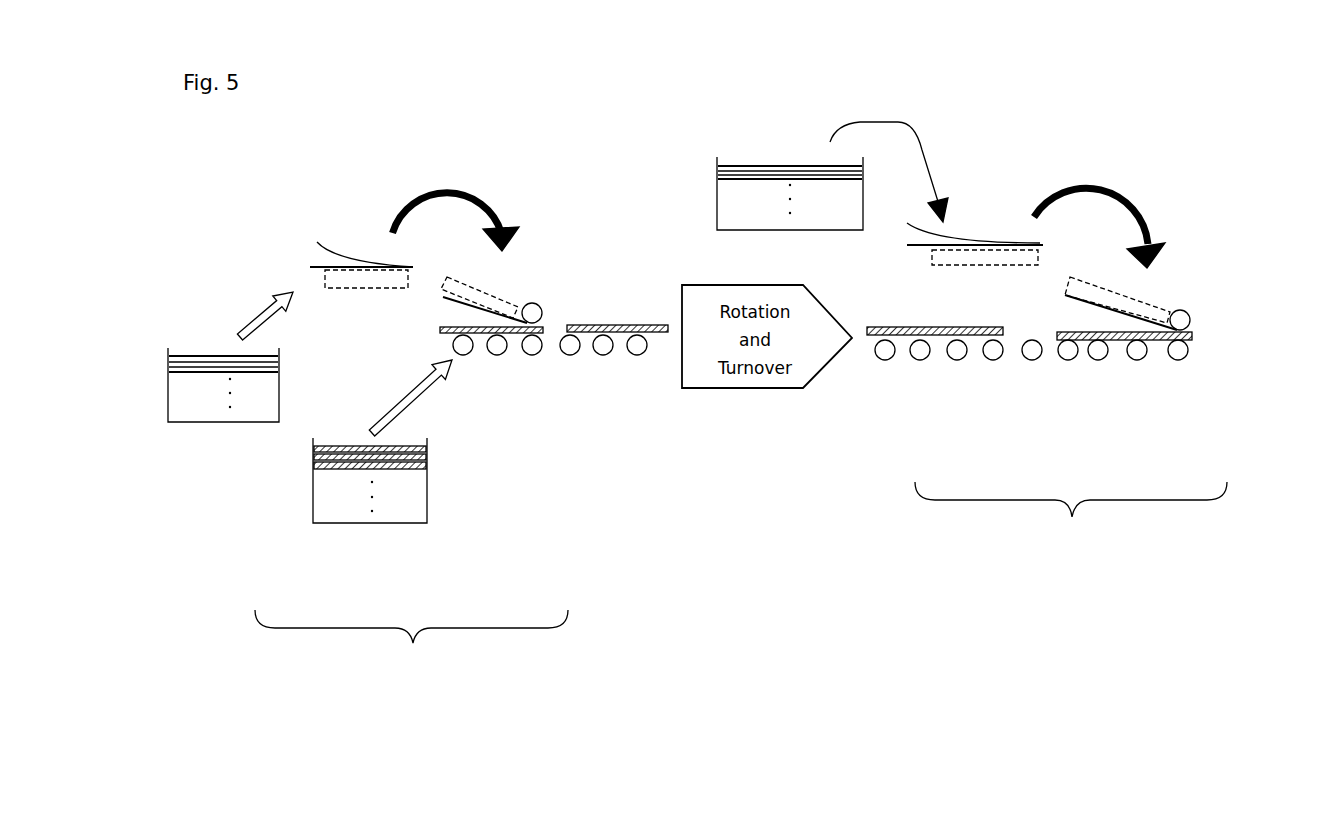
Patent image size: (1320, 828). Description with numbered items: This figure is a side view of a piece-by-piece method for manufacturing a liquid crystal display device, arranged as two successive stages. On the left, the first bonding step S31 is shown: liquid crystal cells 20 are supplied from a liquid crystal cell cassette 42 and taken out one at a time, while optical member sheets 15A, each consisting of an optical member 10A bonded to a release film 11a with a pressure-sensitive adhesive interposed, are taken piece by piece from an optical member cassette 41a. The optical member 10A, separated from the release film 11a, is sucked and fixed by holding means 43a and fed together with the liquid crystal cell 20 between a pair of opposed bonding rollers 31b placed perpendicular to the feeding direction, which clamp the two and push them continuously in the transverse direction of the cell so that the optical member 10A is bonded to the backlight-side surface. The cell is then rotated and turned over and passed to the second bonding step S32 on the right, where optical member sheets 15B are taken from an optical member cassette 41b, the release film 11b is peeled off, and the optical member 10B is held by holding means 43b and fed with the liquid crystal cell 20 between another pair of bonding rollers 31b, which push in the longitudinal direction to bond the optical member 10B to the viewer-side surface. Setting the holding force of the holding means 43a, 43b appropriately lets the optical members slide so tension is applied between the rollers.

The release film 11a is at (340, 262).
The release film 11b is at (990, 243).
The optical member sheet 15A is at (195, 355).
The optical member sheet 15B is at (780, 165).
The optical member 10A is at (445, 298).
The optical member 10B is at (1065, 296).
The liquid crystal cell 20 is at (340, 446).
The bonding rollers 31b is at (535, 303).
The optical member cassette 41a is at (190, 424).
The optical member cassette 41b is at (717, 202).
The liquid crystal cell cassette 42 is at (352, 525).
The holding means 43a is at (460, 286).
The holding means 43b is at (1110, 290).
The first bonding step S31 is at (411, 650).
The second bonding step S32 is at (1071, 522).